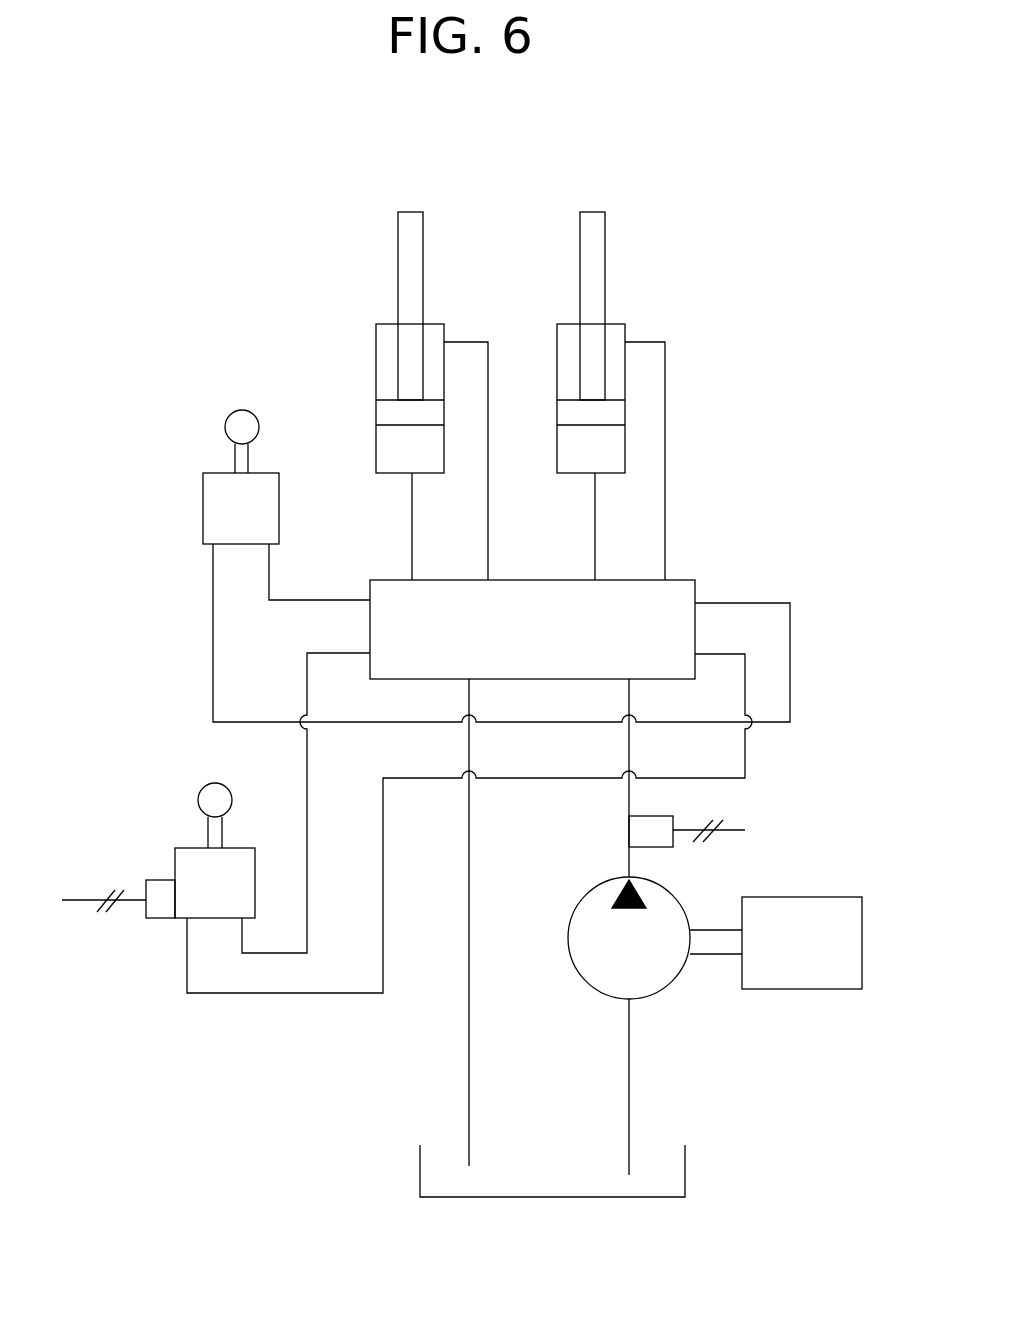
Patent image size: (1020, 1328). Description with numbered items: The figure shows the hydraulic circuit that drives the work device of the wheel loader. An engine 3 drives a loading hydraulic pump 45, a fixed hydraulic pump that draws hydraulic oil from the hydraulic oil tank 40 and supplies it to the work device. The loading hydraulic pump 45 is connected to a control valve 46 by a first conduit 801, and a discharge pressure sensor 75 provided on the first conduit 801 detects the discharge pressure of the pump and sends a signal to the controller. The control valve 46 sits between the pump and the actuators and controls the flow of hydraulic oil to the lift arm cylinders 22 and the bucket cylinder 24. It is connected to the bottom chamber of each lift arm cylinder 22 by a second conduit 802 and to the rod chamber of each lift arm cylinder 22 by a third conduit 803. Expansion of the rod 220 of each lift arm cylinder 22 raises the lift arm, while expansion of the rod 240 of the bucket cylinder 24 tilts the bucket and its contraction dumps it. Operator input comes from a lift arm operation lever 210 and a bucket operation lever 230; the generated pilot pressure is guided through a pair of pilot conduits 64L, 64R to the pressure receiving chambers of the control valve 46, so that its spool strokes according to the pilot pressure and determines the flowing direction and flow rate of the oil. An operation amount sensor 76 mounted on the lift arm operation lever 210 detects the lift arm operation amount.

The engine 3 is at (840, 990).
The lift arm cylinder 22 is at (645, 306).
The bucket cylinder 24 is at (441, 306).
The hydraulic oil tank 40 is at (685, 1176).
The loading hydraulic pump 45 is at (655, 995).
The control valve 46 is at (698, 587).
The pilot conduit 64L is at (308, 795).
The pilot conduit 64R is at (345, 995).
The discharge pressure sensor 75 is at (663, 838).
The operation amount sensor 76 is at (146, 884).
The lift arm operation lever 210 is at (198, 797).
The rod 220 is at (578, 262).
The bucket operation lever 230 is at (226, 413).
The rod 240 is at (396, 262).
The first conduit 801 is at (627, 805).
The second conduit 802 is at (594, 500).
The third conduit 803 is at (667, 395).